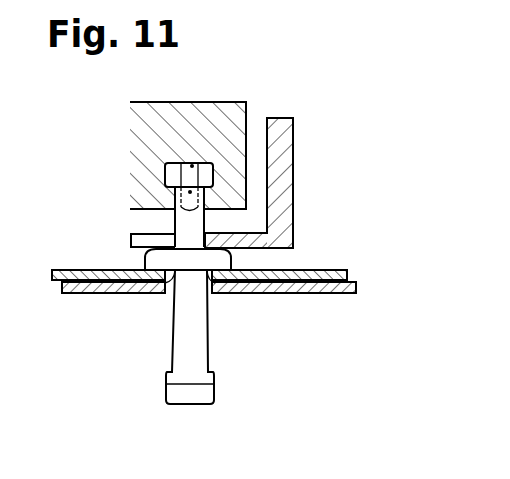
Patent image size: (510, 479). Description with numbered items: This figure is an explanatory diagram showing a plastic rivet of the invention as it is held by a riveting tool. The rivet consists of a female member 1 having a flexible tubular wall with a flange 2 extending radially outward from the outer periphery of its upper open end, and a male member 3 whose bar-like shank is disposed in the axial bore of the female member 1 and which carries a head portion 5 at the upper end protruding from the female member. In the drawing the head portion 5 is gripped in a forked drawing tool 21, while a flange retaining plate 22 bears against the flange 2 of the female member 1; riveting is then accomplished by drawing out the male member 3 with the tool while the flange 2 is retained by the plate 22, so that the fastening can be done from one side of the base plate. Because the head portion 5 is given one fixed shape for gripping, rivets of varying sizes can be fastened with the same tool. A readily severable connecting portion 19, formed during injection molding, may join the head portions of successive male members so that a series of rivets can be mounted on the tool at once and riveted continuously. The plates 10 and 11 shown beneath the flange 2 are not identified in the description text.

The female member 1 is at (175, 343).
The flange 2 is at (155, 262).
The male member 3 is at (180, 223).
The head portion 5 is at (167, 178).
The connecting portion 19 is at (188, 192).
The upper plate 10 is at (338, 270).
The lower plate 11 is at (342, 293).
The forked drawing tool 21 is at (222, 117).
The flange retaining plate 22 is at (243, 242).